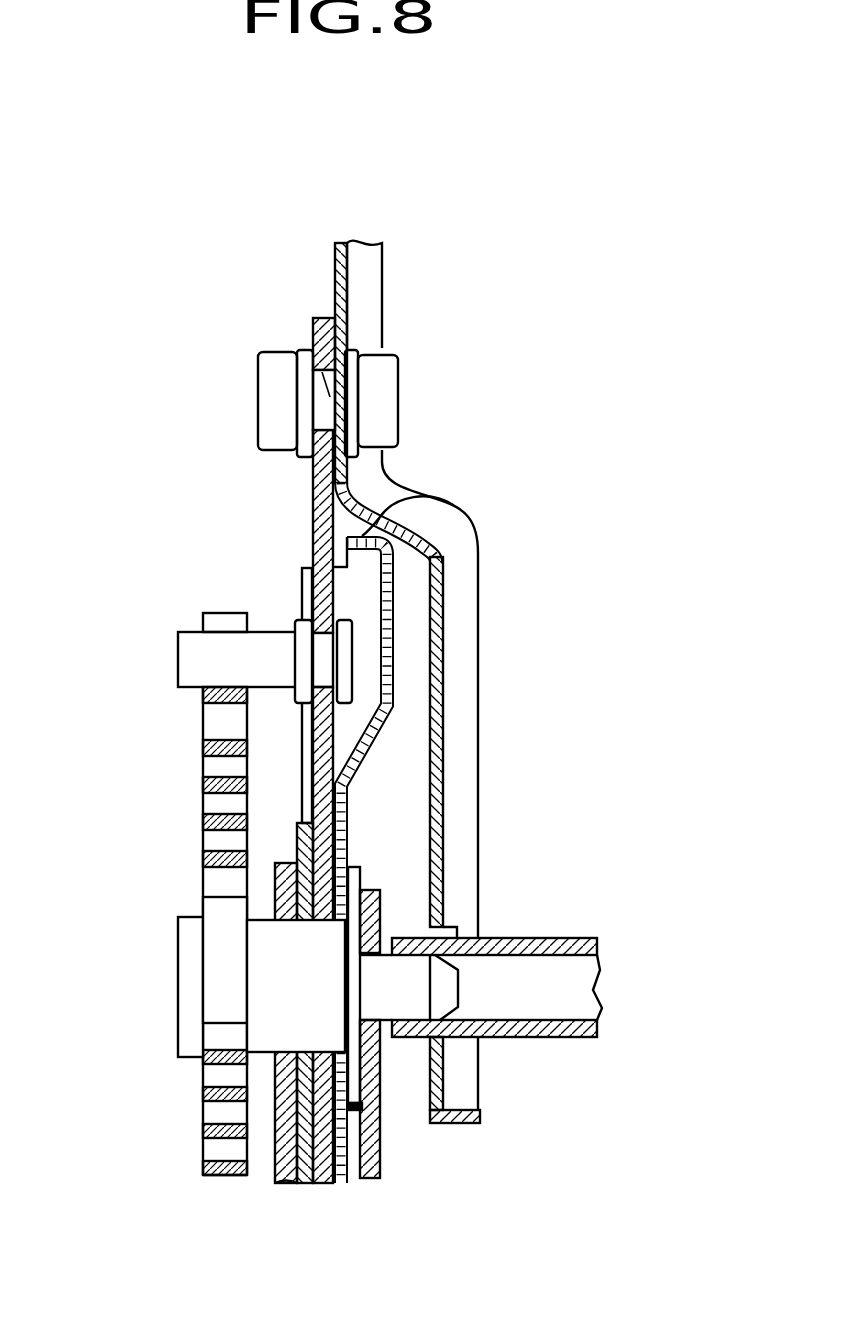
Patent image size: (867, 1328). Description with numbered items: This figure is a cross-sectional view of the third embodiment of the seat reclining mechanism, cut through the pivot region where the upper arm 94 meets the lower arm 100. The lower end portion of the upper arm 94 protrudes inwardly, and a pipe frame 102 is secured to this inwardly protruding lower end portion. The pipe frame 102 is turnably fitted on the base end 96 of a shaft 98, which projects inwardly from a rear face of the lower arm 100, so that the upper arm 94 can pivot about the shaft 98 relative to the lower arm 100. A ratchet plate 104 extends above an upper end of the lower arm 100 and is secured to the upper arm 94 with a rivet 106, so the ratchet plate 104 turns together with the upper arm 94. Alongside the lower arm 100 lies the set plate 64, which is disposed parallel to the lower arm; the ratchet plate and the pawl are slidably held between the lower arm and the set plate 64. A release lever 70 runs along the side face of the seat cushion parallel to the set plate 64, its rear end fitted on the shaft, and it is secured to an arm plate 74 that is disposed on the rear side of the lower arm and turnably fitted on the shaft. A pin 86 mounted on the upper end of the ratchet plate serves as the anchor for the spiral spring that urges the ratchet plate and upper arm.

The set plate 64 is at (300, 847).
The release lever 70 is at (277, 1130).
The arm plate 74 is at (380, 1100).
The pin 86 is at (217, 662).
The upper arm 94 is at (462, 685).
The base end 96 is at (415, 992).
The shaft 98 is at (188, 985).
The lower arm 100 is at (452, 505).
The pipe frame 102 is at (585, 935).
The ratchet plate 104 is at (323, 753).
The rivet 106 is at (306, 342).